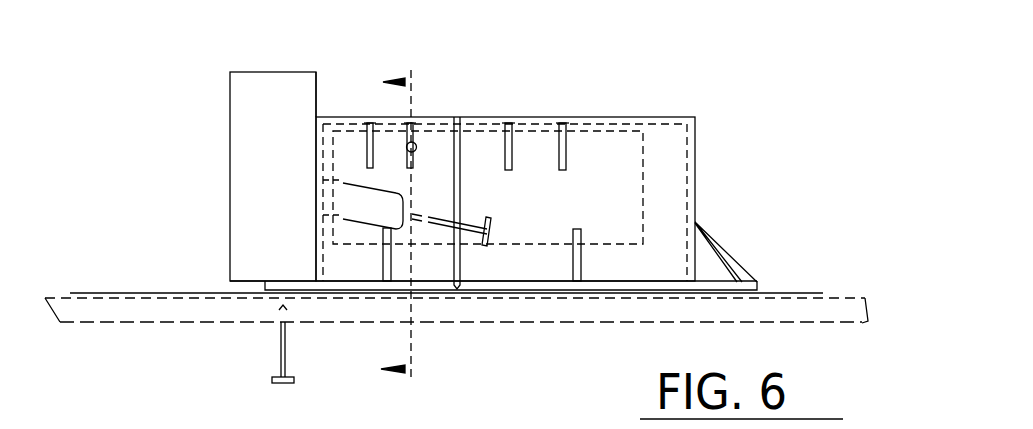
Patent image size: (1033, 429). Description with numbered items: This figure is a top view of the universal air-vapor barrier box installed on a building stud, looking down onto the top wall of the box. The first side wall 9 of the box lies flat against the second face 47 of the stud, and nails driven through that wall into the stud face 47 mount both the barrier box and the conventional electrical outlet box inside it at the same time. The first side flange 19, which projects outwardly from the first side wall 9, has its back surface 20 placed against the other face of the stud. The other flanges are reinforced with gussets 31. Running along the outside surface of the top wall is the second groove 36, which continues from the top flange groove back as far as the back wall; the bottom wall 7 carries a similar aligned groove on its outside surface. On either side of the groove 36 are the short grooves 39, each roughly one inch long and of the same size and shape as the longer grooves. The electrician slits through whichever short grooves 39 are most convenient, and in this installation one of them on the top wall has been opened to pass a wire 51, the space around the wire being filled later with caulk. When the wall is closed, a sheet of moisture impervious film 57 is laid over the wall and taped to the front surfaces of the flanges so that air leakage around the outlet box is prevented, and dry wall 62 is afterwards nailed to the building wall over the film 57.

The first side wall 9 is at (316, 157).
The second face of the stud 47 is at (316, 95).
The short grooves 39 is at (374, 143).
The wire 51 is at (407, 151).
The second groove 36 is at (462, 210).
The gussets 31 is at (388, 253).
The bottom wall 7 is at (404, 216).
The back surface of the first side flange 20 is at (285, 280).
The first side flange 19 is at (265, 288).
The moisture impervious film 57 is at (83, 292).
The dry wall 62 is at (88, 323).